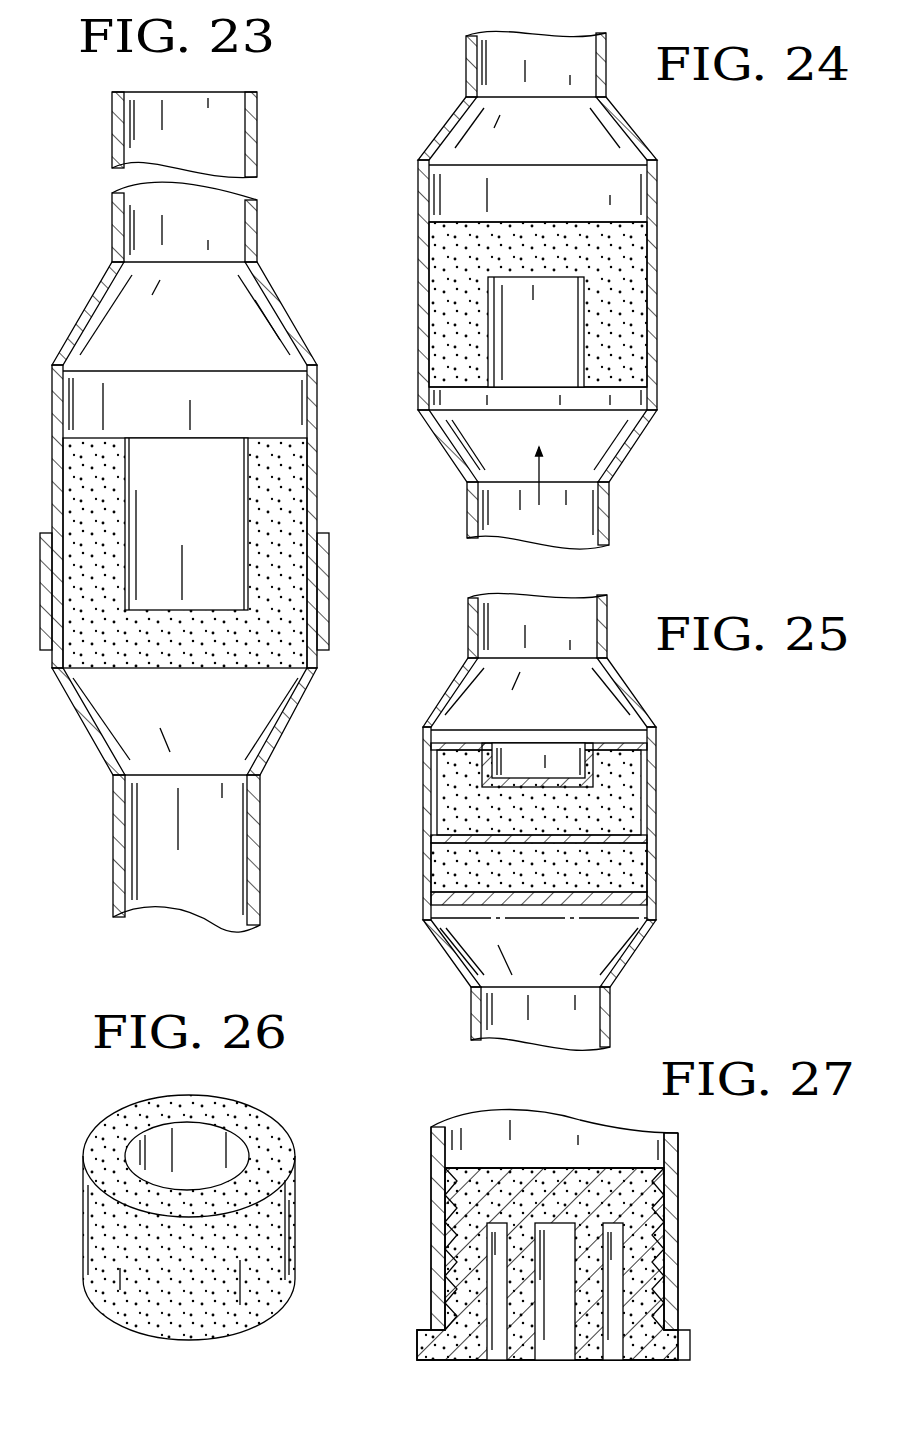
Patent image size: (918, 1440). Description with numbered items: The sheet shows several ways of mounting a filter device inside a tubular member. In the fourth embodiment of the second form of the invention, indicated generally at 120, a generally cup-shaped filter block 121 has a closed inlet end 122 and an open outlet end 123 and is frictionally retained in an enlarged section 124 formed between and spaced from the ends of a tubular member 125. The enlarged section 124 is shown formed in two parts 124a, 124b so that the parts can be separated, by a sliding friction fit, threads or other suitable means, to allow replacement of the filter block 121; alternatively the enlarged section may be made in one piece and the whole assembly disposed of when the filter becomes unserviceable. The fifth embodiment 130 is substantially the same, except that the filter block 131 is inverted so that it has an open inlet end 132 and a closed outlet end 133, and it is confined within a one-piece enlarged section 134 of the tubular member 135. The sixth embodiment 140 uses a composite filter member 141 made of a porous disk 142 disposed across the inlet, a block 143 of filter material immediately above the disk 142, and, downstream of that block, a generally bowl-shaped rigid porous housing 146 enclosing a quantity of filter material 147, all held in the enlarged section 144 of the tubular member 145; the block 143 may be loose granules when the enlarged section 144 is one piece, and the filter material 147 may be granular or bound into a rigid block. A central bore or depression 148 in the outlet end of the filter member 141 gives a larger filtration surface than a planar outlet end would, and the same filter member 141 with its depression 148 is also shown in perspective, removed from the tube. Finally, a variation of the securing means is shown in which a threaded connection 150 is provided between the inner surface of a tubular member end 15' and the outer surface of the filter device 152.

In FIG. 23, the fourth embodiment of the second form of the invention 120 is at (60, 317).
In FIG. 23, the filter block 121 is at (298, 508).
In FIG. 23, the closed inlet end 122 is at (158, 670).
In FIG. 23, the open outlet end 123 is at (243, 462).
In FIG. 23, the enlarged section 124 is at (322, 403).
In FIG. 23, the first part of enlarged section 124a is at (321, 452).
In FIG. 23, the second part of enlarged section 124b is at (331, 596).
In FIG. 23, the tubular member 125 is at (258, 232).
In FIG. 24, the fifth embodiment of the second form of the invention 130 is at (688, 150).
In FIG. 24, the filter block 131 is at (622, 325).
In FIG. 24, the open inlet end 132 is at (490, 370).
In FIG. 24, the closed outlet end 133 is at (510, 222).
In FIG. 24, the enlarged section 134 is at (420, 208).
In FIG. 24, the tubular member 135 is at (466, 78).
In FIG. 25, the sixth embodiment of the second form of the invention 140 is at (688, 728).
In FIG. 26, the sixth embodiment of the second form of the invention 140 is at (282, 1086).
In FIG. 25, the filter member 141 is at (652, 858).
In FIG. 26, the filter member 141 is at (292, 1140).
In FIG. 25, the porous disk 142 is at (458, 905).
In FIG. 25, the block of filter material 143 is at (463, 872).
In FIG. 25, the enlarged section 144 is at (430, 755).
In FIG. 25, the tubular member 145 is at (468, 640).
In FIG. 25, the bowl-shaped rigid porous housing 146 is at (432, 800).
In FIG. 25, the filter material 147 is at (460, 812).
In FIG. 25, the central bore or depression 148 is at (582, 765).
In FIG. 26, the central bore or depression 148 is at (155, 1140).
In FIG. 27, the shell 15' is at (568, 1221).
In FIG. 27, the threaded connection 150 is at (660, 1243).
In FIG. 27, the filter device 152 is at (664, 1170).